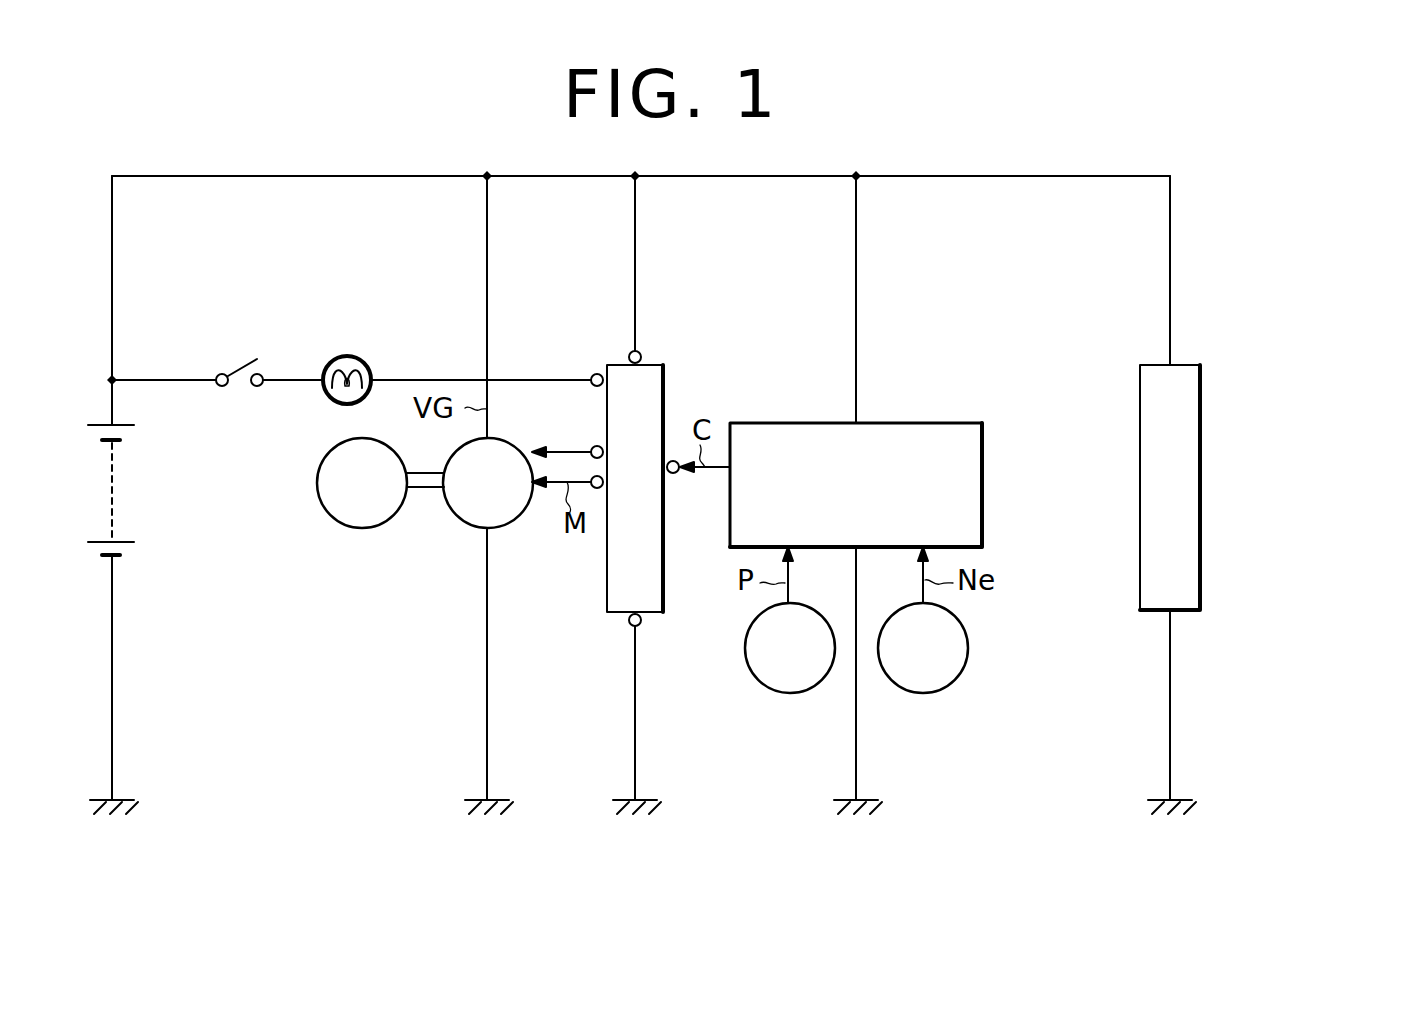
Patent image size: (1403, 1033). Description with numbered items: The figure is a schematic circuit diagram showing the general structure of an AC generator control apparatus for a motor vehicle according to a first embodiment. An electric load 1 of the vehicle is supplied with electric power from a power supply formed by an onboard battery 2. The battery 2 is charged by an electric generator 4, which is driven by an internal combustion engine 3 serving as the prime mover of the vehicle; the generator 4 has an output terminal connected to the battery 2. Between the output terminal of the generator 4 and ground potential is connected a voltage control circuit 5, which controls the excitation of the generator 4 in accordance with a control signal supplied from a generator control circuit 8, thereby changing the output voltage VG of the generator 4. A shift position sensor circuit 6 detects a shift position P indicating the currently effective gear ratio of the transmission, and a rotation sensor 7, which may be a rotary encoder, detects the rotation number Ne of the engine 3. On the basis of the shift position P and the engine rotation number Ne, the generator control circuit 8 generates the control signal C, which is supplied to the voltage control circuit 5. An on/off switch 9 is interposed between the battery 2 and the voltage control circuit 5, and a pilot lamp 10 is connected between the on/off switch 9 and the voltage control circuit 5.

The electric load 1 is at (1200, 425).
The onboard battery 2 is at (112, 472).
The internal combustion engine 3 is at (318, 490).
The electric generator 4 is at (463, 520).
The voltage control circuit 5 is at (665, 370).
The shift position sensor circuit 6 is at (763, 683).
The rotation sensor 7 is at (965, 655).
The generator control circuit 8 is at (982, 450).
The on/off switch 9 is at (258, 358).
The pilot lamp 10 is at (352, 355).